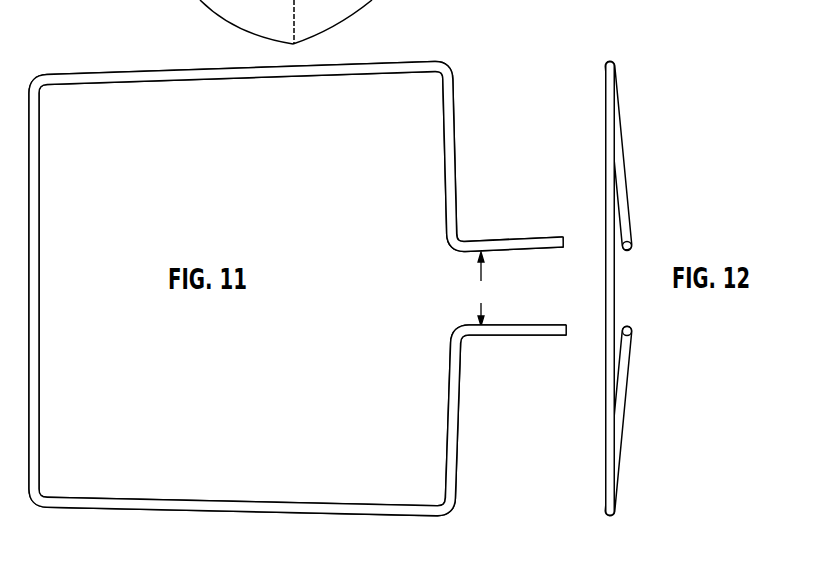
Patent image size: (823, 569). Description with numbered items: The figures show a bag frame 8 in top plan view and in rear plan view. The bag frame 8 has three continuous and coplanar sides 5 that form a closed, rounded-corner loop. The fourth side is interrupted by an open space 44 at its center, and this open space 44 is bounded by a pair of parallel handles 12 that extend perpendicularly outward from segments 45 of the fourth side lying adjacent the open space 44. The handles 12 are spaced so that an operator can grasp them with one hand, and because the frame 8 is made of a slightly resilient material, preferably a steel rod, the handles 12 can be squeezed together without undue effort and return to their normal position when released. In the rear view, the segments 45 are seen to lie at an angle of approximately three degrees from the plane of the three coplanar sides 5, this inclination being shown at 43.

In FIG. 11, the coplanar sides 5 is at (230, 79).
In FIG. 12, the coplanar sides 5 is at (606, 289).
In FIG. 11, the bag frame 8 is at (104, 66).
In FIG. 12, the bag frame 8 is at (624, 117).
In FIG. 11, the handles 12 is at (525, 240).
In FIG. 12, the three degree inclination 43 is at (608, 250).
In FIG. 11, the open space 44 is at (483, 289).
In FIG. 11, the segments of the fourth side 45 is at (457, 152).
In FIG. 12, the segments of the fourth side 45 is at (622, 177).